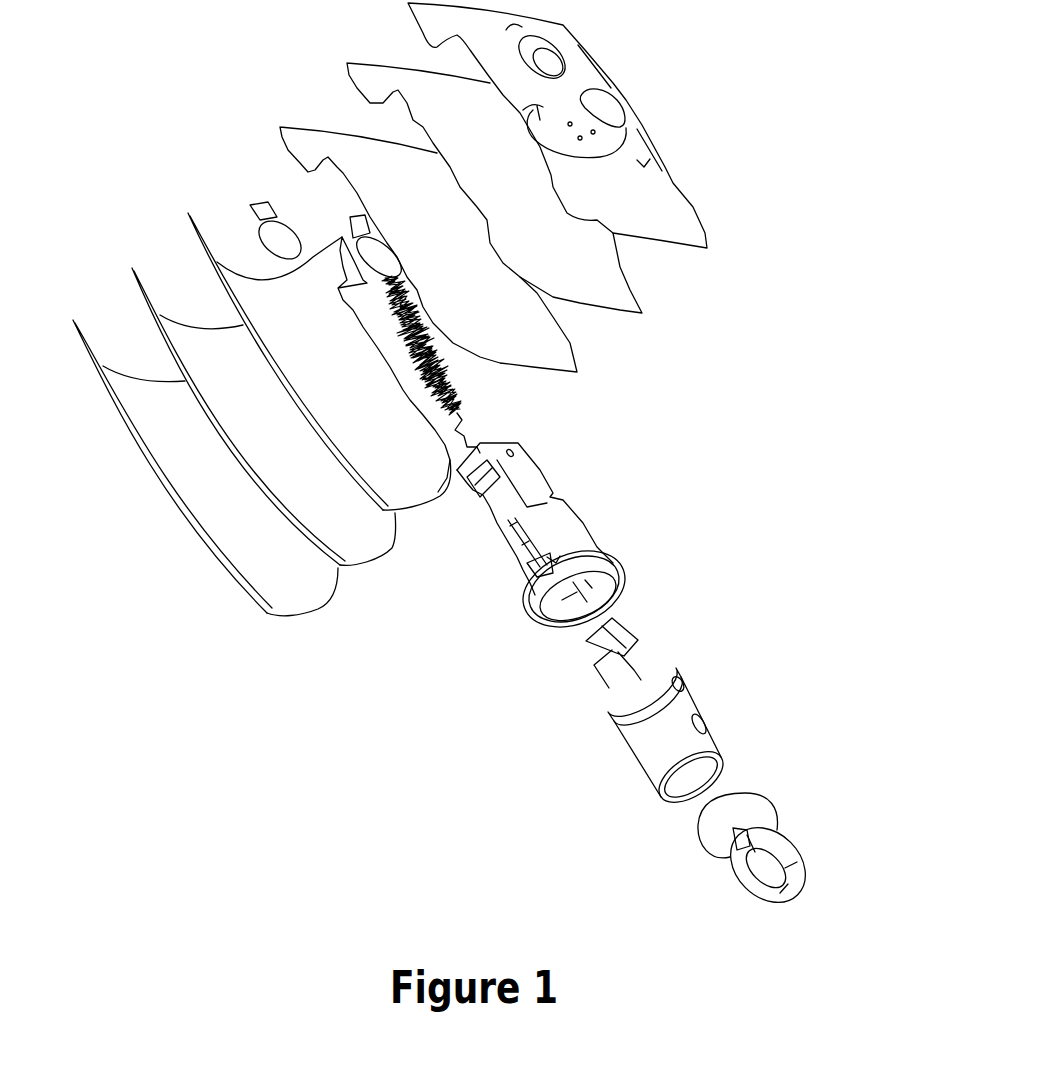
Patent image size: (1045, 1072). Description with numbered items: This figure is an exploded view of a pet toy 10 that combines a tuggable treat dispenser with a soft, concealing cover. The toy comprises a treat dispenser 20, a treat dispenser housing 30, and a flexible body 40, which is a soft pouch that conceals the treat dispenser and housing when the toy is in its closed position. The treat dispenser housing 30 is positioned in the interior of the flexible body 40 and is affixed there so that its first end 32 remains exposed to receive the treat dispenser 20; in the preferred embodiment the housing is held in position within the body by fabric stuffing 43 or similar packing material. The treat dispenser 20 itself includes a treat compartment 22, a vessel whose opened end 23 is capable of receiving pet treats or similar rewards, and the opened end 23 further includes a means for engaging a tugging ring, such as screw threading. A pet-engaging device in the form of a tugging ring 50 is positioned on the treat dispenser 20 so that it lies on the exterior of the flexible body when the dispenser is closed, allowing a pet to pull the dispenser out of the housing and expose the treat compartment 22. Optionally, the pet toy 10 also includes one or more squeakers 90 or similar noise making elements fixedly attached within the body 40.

The pet toy 10 is at (766, 277).
The treat dispenser 20 is at (682, 729).
The treat compartment 22 is at (643, 743).
The opened end 23 is at (657, 800).
The treat dispenser housing 30 is at (577, 542).
The first end 32 is at (617, 582).
The flexible body 40 is at (130, 513).
The fabric stuffing 43 is at (483, 385).
The tugging ring 50 is at (702, 883).
The squeaker 90 is at (236, 183).